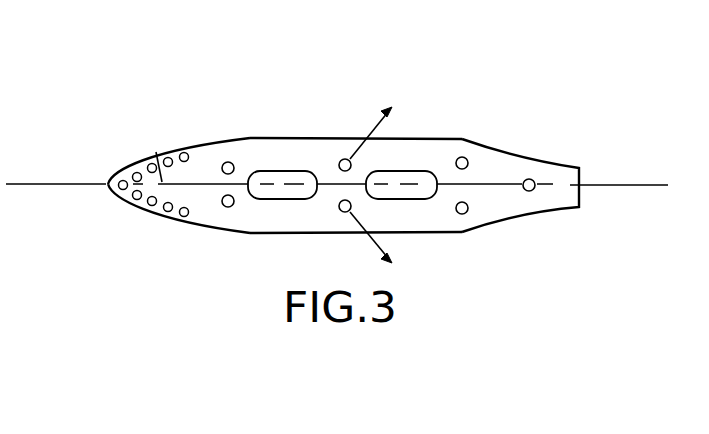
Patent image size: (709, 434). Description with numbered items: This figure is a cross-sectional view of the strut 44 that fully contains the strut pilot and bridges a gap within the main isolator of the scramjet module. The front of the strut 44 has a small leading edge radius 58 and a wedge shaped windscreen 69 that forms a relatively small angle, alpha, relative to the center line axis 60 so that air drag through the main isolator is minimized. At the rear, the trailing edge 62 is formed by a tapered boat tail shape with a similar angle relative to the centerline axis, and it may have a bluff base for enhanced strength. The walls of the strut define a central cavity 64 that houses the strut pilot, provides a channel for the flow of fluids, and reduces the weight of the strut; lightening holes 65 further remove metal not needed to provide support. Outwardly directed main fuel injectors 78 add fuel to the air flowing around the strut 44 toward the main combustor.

The strut 44 is at (420, 92).
The leading edge radius 58 is at (110, 178).
The center line axis 60 is at (622, 187).
The trailing edge 62 is at (515, 218).
The central cavity 64 is at (280, 177).
The lightening holes 65 is at (402, 170).
The wedge shaped windscreen 69 is at (155, 152).
The main fuel injectors 78 is at (345, 208).